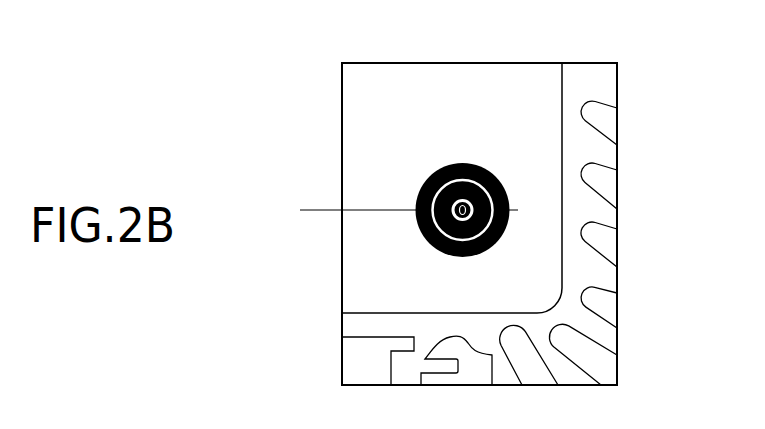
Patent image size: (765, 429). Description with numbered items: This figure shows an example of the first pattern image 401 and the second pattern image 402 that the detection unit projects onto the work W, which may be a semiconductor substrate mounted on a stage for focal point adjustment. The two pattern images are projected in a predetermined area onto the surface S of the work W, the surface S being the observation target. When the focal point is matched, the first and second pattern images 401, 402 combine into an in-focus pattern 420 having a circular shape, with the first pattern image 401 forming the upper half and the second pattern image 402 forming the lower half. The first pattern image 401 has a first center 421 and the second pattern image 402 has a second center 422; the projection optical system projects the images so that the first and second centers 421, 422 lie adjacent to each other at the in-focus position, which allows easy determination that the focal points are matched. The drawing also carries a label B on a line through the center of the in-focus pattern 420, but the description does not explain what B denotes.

The in-focus pattern 420 is at (426, 171).
The first center 421 is at (453, 197).
The second center 422 is at (433, 221).
The first pattern image 401 is at (475, 172).
The second pattern image 402 is at (450, 248).
The optical axis B is at (397, 211).
The surface S is at (540, 79).
The work W is at (604, 278).